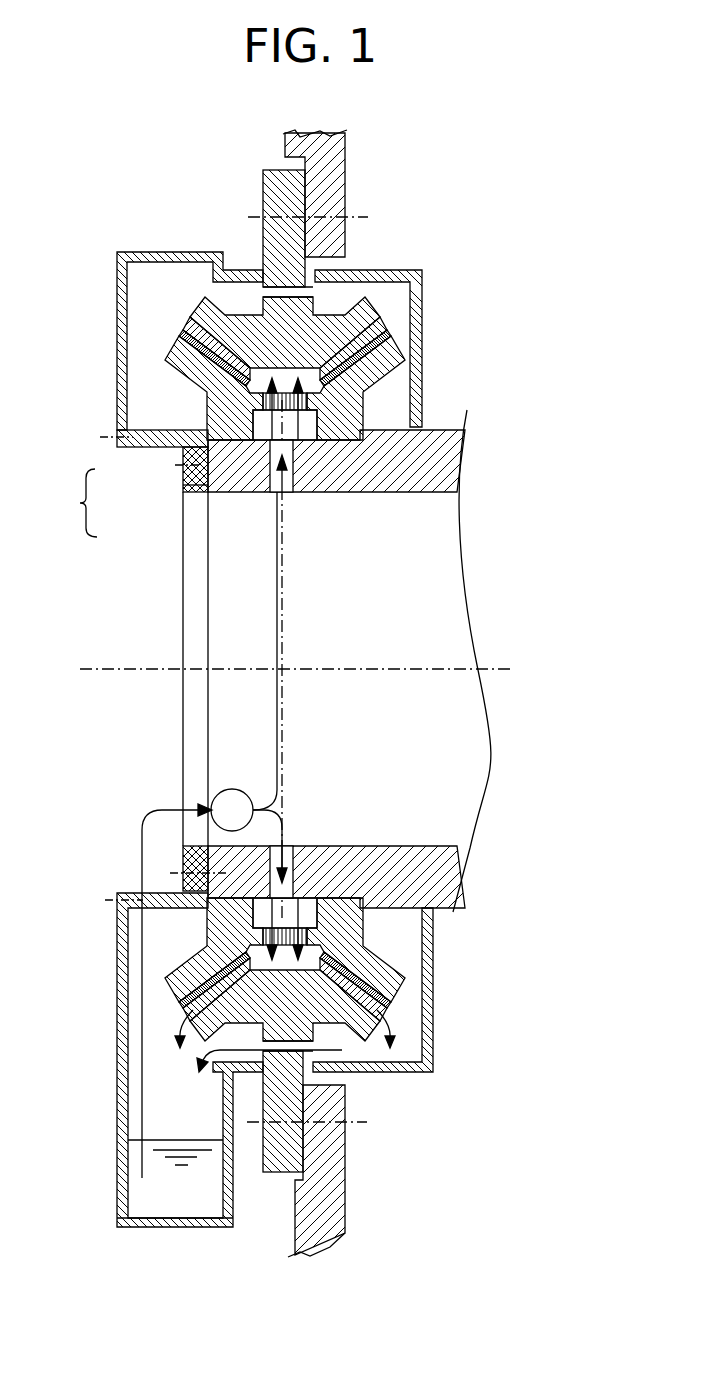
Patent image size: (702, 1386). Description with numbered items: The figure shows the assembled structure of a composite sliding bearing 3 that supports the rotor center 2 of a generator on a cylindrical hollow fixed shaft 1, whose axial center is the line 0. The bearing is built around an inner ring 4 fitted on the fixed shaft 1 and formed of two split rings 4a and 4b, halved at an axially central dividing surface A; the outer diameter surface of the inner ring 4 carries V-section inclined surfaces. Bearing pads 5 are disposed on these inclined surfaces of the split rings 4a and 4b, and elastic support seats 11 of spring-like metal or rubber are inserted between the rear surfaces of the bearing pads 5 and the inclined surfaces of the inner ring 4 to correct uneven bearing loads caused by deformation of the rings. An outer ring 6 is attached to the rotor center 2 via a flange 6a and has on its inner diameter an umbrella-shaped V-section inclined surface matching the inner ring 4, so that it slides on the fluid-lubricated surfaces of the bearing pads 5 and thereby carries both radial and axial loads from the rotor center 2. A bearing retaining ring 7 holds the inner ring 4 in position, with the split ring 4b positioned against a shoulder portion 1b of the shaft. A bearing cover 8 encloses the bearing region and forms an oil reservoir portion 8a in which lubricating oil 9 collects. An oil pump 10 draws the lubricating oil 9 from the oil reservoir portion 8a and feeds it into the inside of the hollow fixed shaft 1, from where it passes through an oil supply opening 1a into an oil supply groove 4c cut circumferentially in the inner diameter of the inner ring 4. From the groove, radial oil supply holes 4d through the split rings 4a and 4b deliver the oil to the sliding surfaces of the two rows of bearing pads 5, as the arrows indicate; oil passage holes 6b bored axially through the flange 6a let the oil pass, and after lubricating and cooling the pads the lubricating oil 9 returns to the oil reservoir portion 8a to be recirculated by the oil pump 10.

The axial center 0 is at (311, 660).
The fixed shaft 1 is at (477, 440).
The oil supply opening 1a is at (285, 460).
The shoulder portion 1b is at (328, 403).
The rotor center 2 is at (323, 183).
The composite sliding bearing 3 is at (172, 312).
The inner ring 4 is at (79, 503).
The split ring 4a is at (152, 447).
The split ring 4b is at (190, 483).
The oil supply groove 4c is at (330, 897).
The oil supply holes 4d is at (263, 933).
The bearing pads 5 is at (190, 330).
The outer ring 6 is at (338, 313).
The flange 6a is at (277, 205).
The oil passage holes 6b is at (350, 1070).
The bearing retaining ring 7 is at (197, 462).
The bearing cover 8 is at (146, 258).
The oil reservoir portion 8a is at (170, 1223).
The lubricating oil 9 is at (180, 1168).
The oil pump 10 is at (227, 803).
The elastic support seats 11 is at (167, 358).
The dividing surface A is at (282, 580).